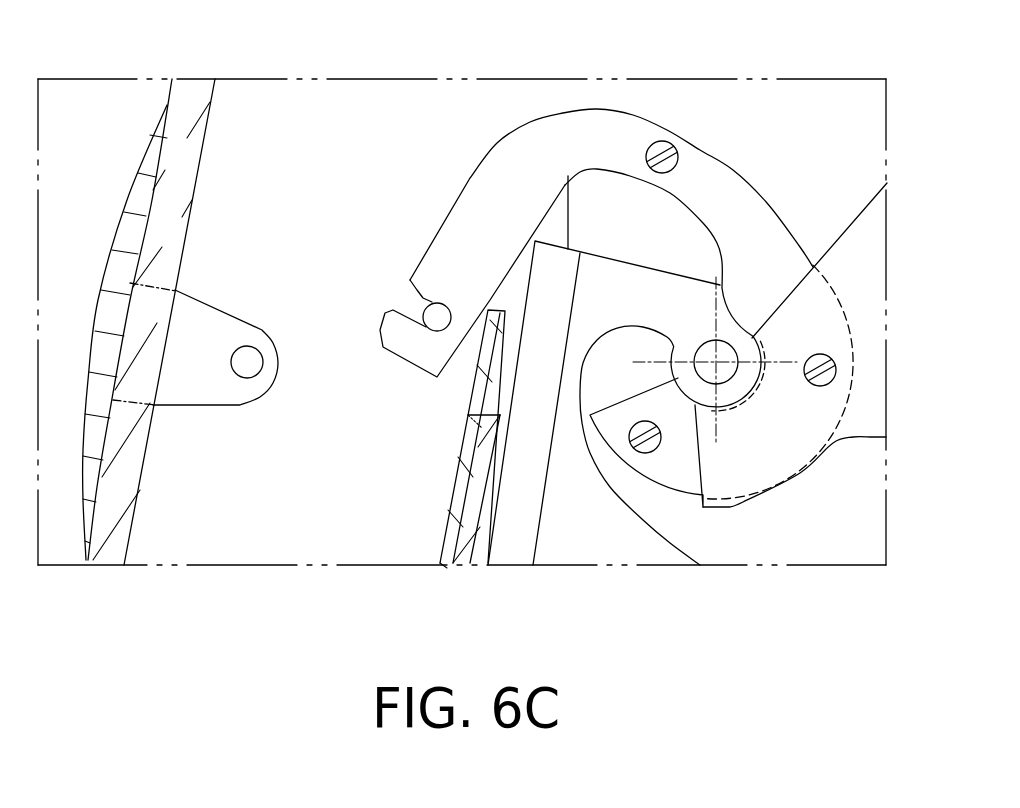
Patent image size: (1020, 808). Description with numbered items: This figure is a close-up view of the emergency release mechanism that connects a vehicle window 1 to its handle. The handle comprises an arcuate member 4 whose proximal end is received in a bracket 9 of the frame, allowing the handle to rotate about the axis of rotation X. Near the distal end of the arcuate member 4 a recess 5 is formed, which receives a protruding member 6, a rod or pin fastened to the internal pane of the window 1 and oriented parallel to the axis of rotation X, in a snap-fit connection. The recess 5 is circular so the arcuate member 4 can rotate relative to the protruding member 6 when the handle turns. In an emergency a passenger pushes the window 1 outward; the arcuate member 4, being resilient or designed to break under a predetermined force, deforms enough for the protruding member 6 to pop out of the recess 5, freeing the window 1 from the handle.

The window 1 is at (150, 450).
The arcuate member 4 is at (730, 220).
The recess 5 is at (437, 317).
The protruding member 6 is at (247, 360).
The bracket 9 is at (565, 525).
The axis of rotation X is at (716, 362).